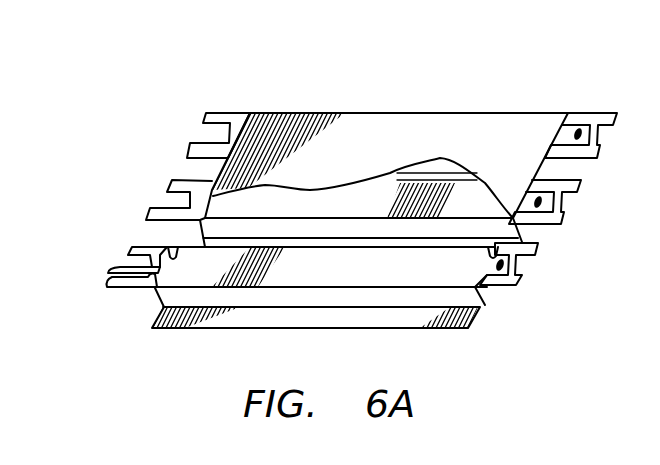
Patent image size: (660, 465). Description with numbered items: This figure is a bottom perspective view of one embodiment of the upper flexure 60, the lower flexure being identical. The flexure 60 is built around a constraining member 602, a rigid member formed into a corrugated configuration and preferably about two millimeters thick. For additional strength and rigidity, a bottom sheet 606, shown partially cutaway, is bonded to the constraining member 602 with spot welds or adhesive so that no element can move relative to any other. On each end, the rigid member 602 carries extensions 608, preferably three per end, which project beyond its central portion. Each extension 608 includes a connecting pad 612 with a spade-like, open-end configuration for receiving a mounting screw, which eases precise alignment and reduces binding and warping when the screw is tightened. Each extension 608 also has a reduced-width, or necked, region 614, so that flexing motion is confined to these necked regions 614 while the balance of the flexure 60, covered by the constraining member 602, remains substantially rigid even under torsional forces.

The upper flexure 60 is at (344, 86).
The bottom sheet 606 is at (499, 122).
The extensions 608 is at (132, 248).
The necked region 614 is at (120, 267).
The connecting pads 612 is at (108, 279).
The constraining member 602 is at (380, 268).